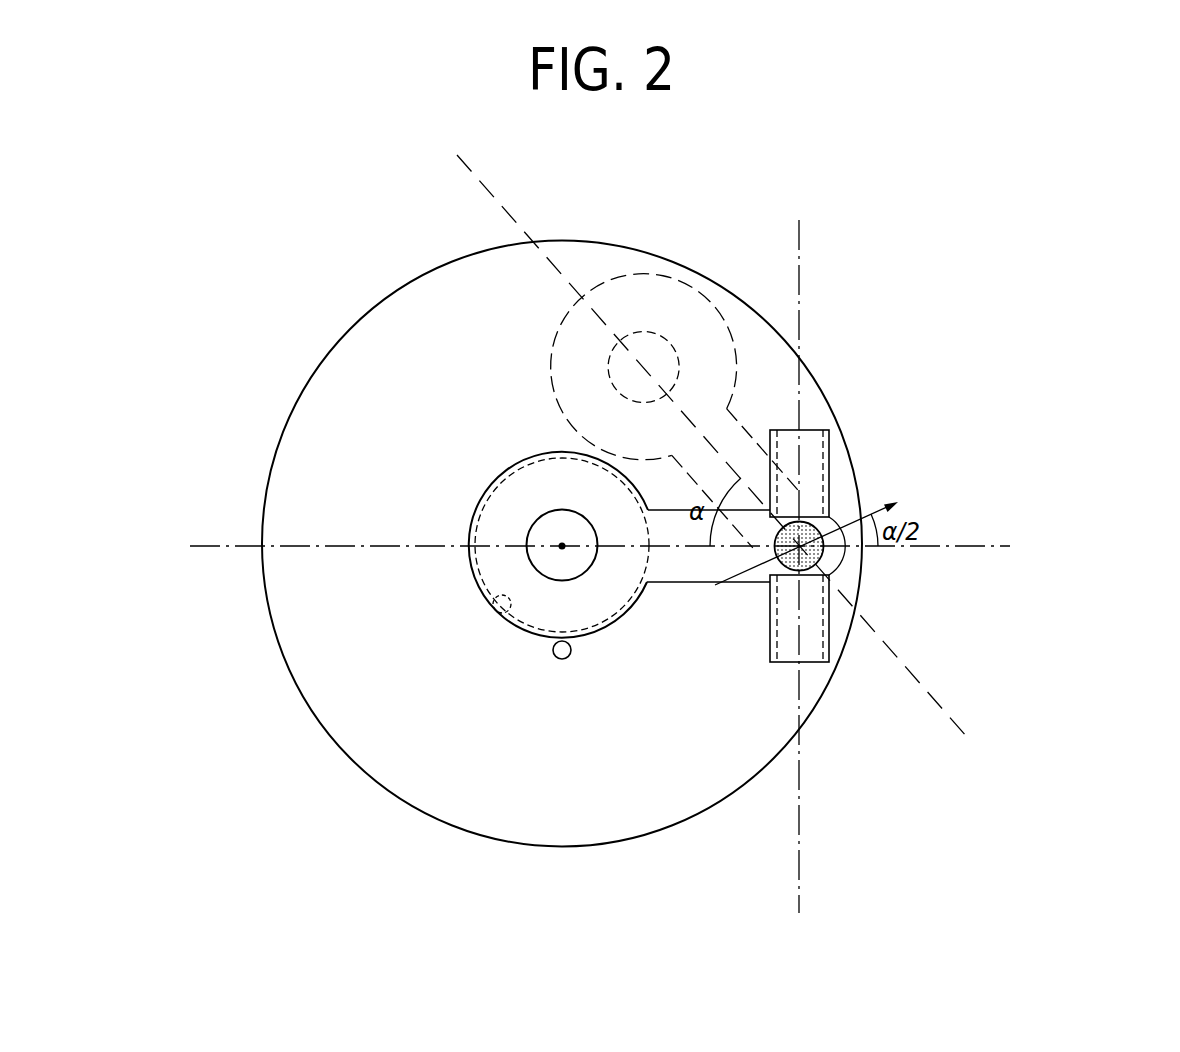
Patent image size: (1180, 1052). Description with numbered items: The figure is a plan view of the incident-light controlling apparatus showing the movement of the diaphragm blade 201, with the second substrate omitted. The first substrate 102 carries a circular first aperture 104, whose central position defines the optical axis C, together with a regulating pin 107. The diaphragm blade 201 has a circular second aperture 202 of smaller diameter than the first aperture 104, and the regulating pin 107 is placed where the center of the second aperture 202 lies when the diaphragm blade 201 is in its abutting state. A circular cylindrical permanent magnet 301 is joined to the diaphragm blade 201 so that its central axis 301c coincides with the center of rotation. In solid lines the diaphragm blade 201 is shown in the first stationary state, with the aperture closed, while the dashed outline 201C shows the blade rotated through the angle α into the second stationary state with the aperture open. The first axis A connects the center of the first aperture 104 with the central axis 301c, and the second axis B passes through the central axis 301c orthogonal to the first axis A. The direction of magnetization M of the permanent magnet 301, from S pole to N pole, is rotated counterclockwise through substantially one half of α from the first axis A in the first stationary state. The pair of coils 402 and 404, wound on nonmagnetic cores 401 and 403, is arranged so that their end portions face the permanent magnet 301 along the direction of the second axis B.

The first substrate 102 is at (373, 733).
The first aperture 104 is at (480, 603).
The regulating pin 107 is at (555, 661).
The diaphragm blade 201 is at (510, 510).
The diaphragm blade in open state 201C is at (633, 268).
The second aperture 202 is at (547, 510).
The permanent magnet 301 is at (833, 565).
The central axis 301c is at (799, 547).
The core 401 is at (828, 457).
The coil 402 is at (836, 430).
The core 403 is at (828, 632).
The coil 404 is at (817, 665).
The first axis A is at (990, 545).
The second axis B is at (800, 302).
The optical axis C is at (562, 546).
The direction of magnetization M is at (819, 535).